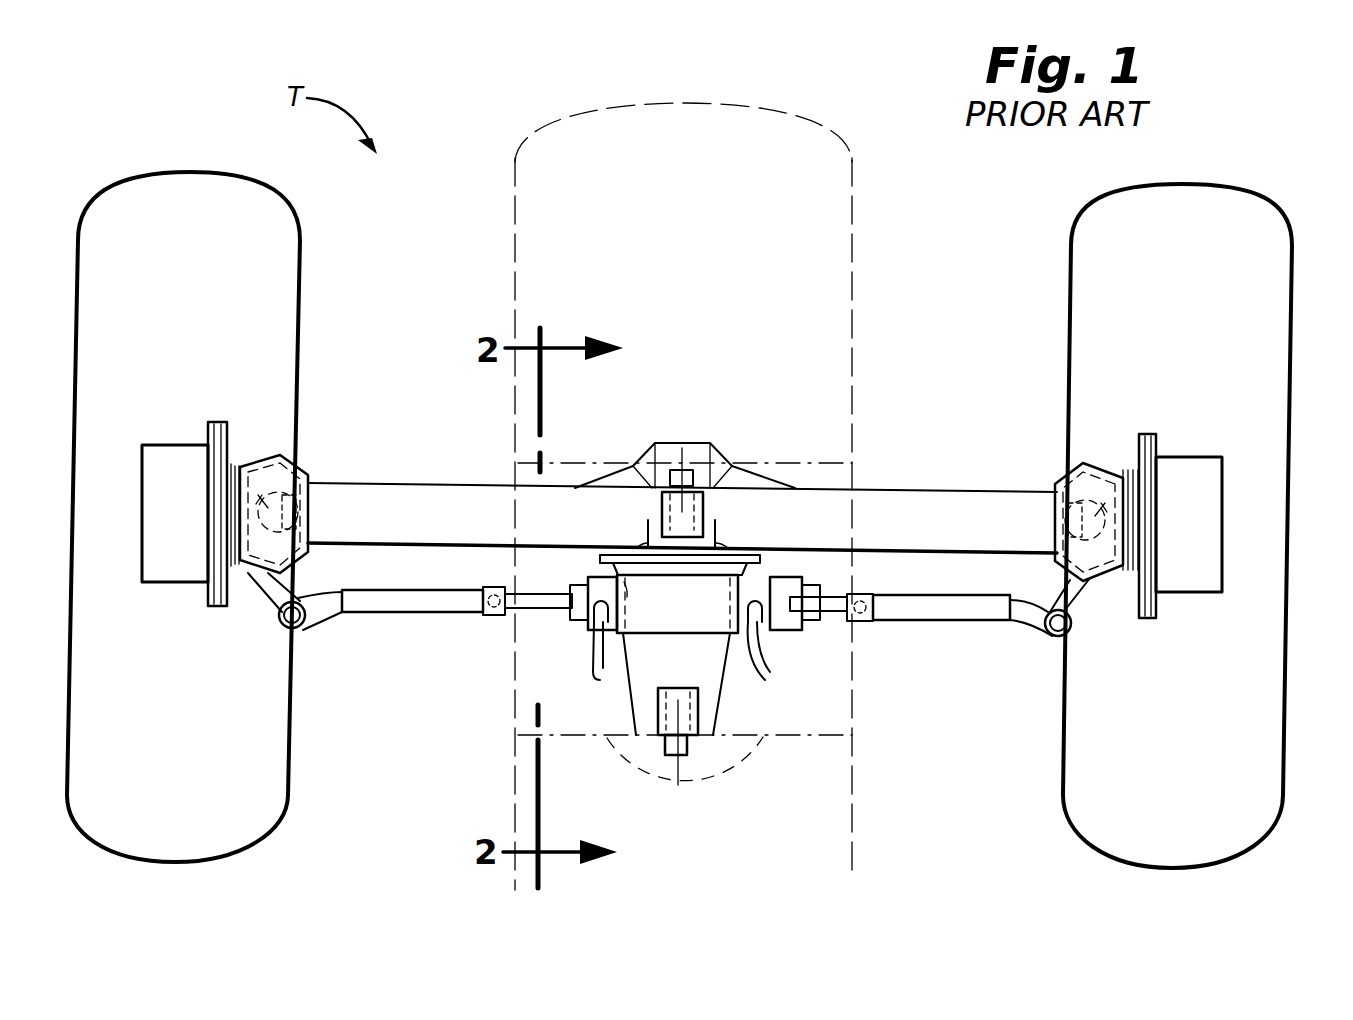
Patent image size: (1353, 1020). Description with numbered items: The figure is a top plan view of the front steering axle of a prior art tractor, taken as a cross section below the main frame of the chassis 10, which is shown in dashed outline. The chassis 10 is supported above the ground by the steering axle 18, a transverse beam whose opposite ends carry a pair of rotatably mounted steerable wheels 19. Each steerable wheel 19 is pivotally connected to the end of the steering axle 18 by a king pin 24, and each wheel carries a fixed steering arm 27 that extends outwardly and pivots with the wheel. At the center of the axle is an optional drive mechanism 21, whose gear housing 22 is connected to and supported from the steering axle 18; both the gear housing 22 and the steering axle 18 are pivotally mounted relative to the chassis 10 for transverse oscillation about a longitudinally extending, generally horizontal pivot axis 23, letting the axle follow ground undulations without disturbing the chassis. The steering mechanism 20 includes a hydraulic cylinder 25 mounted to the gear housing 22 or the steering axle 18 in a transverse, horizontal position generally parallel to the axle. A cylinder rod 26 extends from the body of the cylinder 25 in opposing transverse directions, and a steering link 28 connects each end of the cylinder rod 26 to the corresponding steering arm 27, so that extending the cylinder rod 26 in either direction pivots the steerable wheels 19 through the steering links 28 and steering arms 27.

The chassis 10 is at (592, 112).
The steering axle 18 is at (893, 498).
The steerable wheels 19 is at (305, 230).
The steering mechanism 20 is at (488, 682).
The drive mechanism 21 is at (730, 748).
The gear housing 22 is at (718, 690).
The pivot axis 23 is at (683, 780).
The king pin 24 is at (290, 508).
The hydraulic cylinder 25 is at (658, 612).
The cylinder rod 26 is at (538, 598).
The steering arm 27 is at (270, 585).
The steering link 28 is at (423, 600).